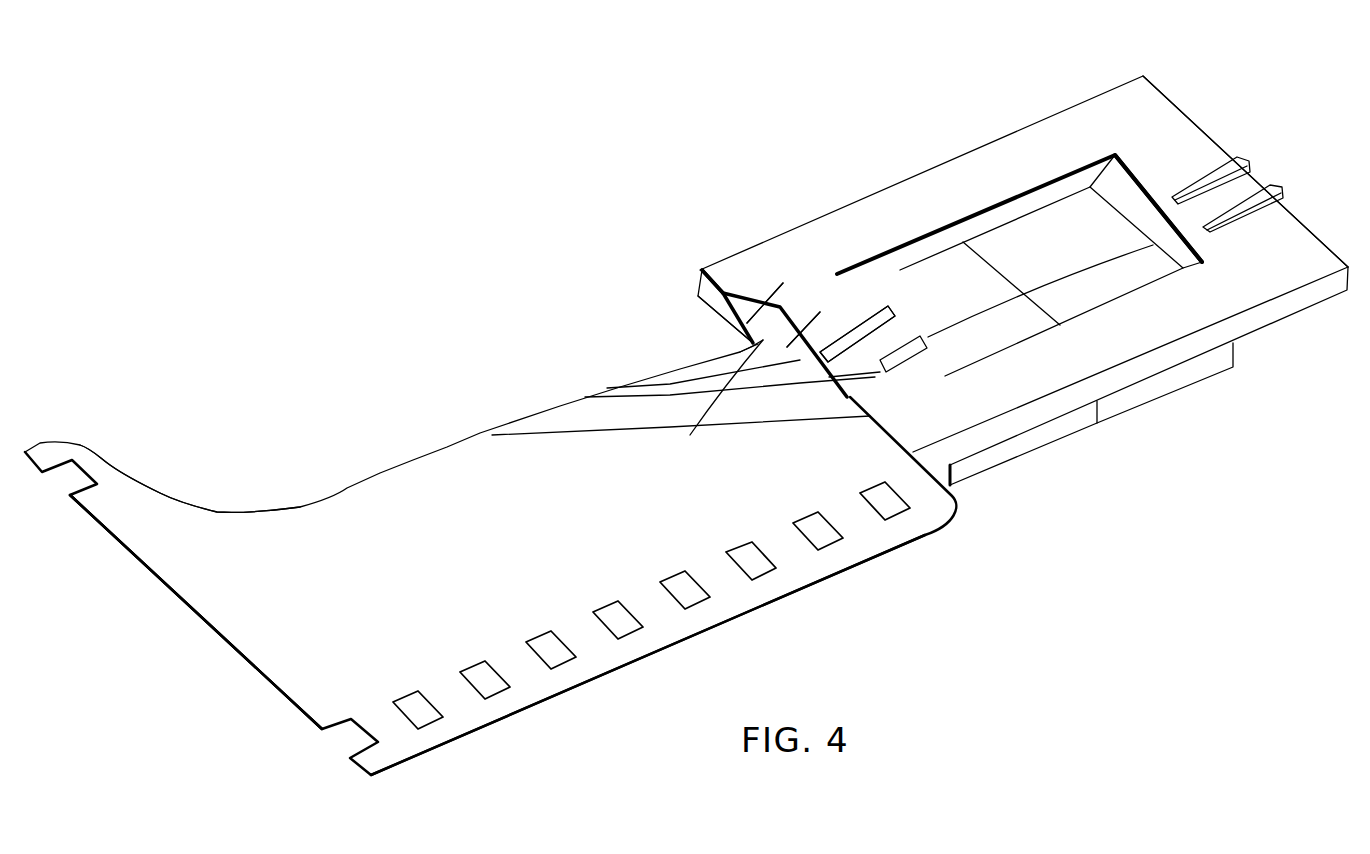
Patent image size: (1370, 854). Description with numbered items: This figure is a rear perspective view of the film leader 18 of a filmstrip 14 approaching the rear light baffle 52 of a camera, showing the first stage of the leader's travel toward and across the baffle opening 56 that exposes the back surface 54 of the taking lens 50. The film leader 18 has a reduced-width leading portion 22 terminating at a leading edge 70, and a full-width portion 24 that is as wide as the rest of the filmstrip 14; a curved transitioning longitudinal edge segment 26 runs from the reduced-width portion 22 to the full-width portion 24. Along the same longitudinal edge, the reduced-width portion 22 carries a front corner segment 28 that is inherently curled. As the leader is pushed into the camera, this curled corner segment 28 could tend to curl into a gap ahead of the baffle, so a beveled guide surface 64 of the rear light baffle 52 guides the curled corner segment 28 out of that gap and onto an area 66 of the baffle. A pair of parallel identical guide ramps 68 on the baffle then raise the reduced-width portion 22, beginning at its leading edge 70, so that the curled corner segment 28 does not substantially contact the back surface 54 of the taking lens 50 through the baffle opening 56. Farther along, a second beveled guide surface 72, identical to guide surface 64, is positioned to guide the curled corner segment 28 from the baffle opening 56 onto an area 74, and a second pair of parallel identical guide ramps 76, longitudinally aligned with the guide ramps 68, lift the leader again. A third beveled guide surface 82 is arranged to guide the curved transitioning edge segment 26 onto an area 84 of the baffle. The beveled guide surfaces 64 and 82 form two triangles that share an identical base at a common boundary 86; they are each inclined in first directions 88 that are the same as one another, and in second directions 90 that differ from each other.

The filmstrip 14 is at (254, 682).
The film leader 18 is at (560, 703).
The reduced-width leading portion 22 is at (587, 524).
The full-width portion 24 is at (198, 592).
The curved transitioning longitudinal edge segment 26 is at (218, 510).
The front corner segment 28 is at (743, 355).
The taking lens 50 is at (1173, 392).
The rear light baffle 52 is at (1293, 303).
The back surface 54 is at (1048, 246).
The baffle opening 56 is at (1106, 306).
The beveled guide surface 64 is at (820, 378).
The area 66 is at (828, 322).
The guide ramps 68 is at (887, 307).
The leading edge 70 is at (882, 420).
The beveled guide surface 72 is at (1119, 178).
The area 74 is at (1168, 172).
The guide ramps 76 is at (1240, 157).
The beveled guide surface 82 is at (733, 330).
The area 84 is at (773, 270).
The common boundary 86 is at (690, 433).
The first directions 88 is at (775, 284).
The second directions 90 is at (738, 307).